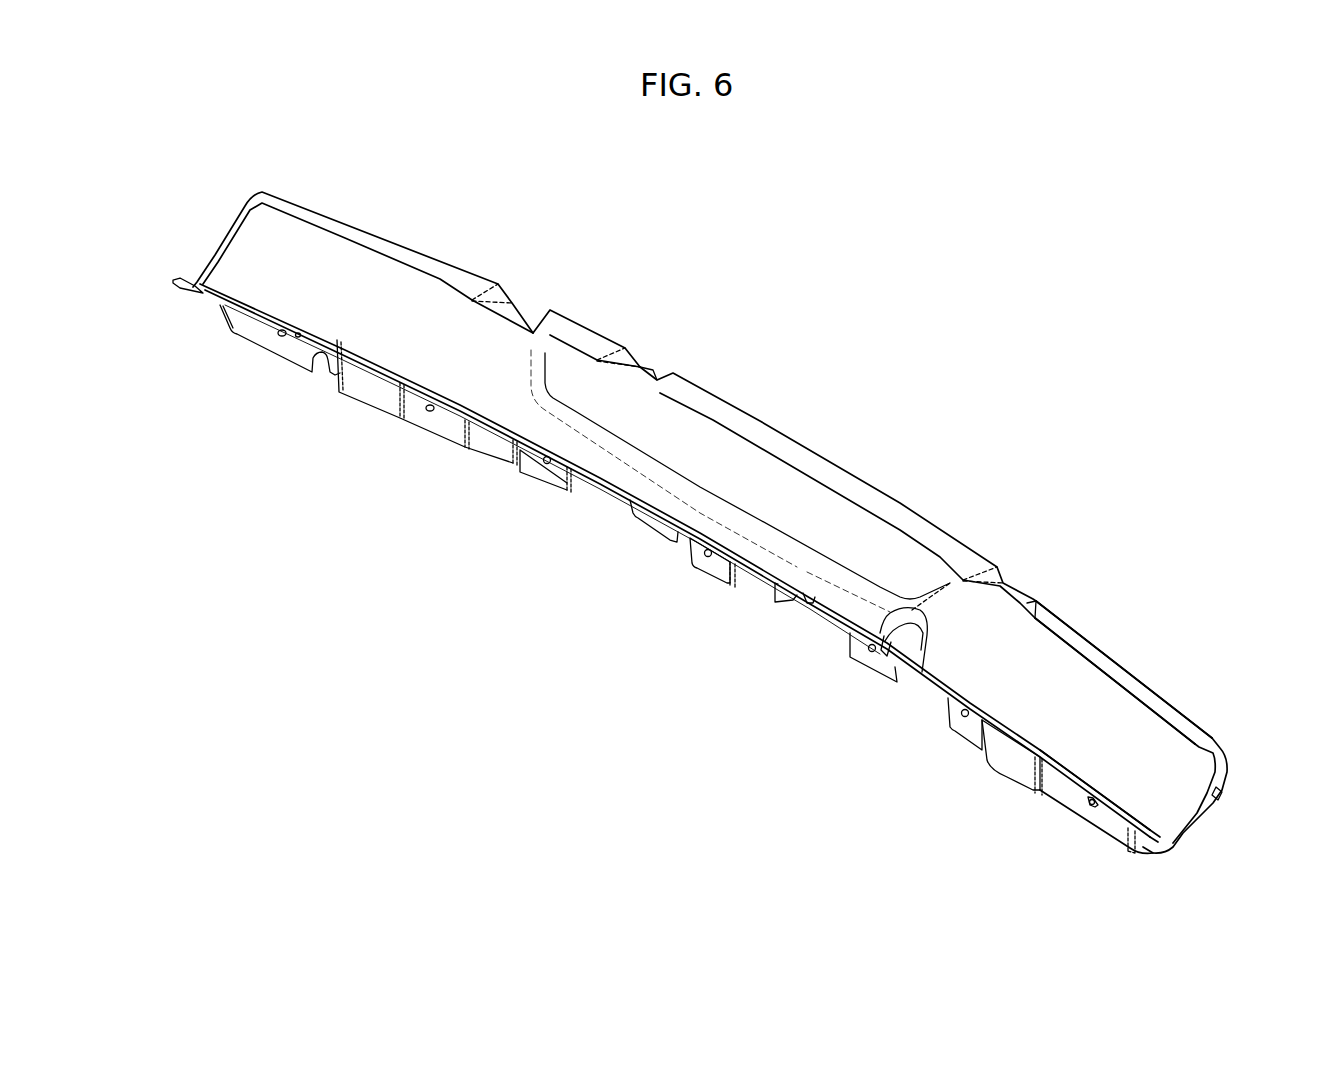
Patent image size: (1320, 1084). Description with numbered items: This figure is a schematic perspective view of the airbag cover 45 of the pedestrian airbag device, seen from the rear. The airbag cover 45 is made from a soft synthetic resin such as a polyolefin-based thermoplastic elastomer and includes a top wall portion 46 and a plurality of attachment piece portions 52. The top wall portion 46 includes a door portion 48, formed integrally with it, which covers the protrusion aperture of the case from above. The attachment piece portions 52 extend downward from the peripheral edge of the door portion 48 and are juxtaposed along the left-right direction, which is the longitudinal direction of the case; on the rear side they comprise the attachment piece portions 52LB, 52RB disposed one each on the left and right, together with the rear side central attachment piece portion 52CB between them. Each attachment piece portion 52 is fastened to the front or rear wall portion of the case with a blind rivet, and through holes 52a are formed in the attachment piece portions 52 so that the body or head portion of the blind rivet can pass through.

The airbag cover 45 is at (1053, 433).
The top wall portion 46 is at (1187, 726).
The door portion 48 is at (1095, 689).
The attachment piece portions 52 is at (659, 621).
The attachment piece portion 52LB is at (495, 456).
The rear side central attachment piece portion 52CB is at (718, 563).
The attachment piece portion 52RB is at (1016, 769).
The through holes 52a is at (548, 465).